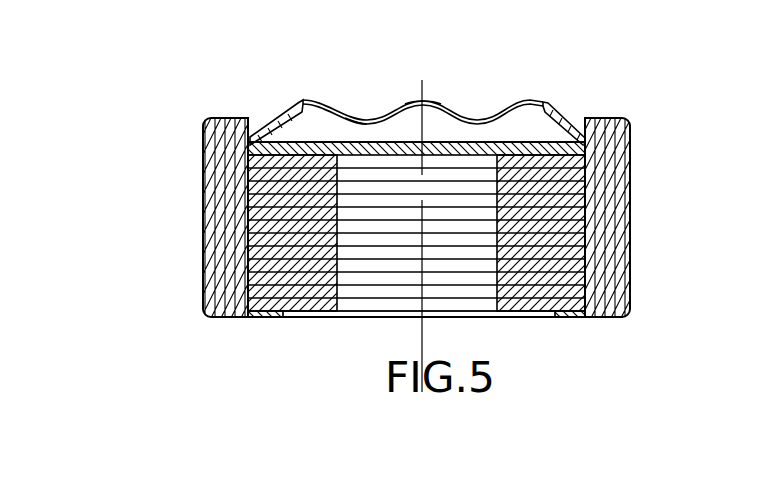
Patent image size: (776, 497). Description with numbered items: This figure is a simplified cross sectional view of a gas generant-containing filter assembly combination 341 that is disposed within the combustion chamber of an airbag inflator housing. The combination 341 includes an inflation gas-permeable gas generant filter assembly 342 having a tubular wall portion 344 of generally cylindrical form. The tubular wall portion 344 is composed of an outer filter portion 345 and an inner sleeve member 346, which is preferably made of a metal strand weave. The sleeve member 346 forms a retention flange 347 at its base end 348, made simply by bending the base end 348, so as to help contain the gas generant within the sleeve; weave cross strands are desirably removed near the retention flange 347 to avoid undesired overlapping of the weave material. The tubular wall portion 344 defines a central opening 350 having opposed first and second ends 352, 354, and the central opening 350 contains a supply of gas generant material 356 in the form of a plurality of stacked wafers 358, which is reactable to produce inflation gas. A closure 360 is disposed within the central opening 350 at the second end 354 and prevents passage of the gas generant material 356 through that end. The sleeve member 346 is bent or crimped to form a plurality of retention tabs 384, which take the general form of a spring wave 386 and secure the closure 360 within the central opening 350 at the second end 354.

The gas generant-containing filter assembly combination 341 is at (177, 82).
The gas generant filter assembly 342 is at (203, 222).
The tubular wall portion 344 is at (632, 210).
The outer filter portion 345 is at (607, 317).
The sleeve member 346 is at (252, 135).
The retention flange 347 is at (260, 320).
The base end 348 is at (232, 338).
The central opening 350 is at (433, 128).
The first end 352 is at (293, 320).
The second end 354 is at (355, 113).
The gas generant material 356 is at (538, 288).
The wafers 358 is at (578, 160).
The closure 360 is at (563, 115).
The retention tabs 384 is at (292, 108).
The spring wave 386 is at (407, 100).